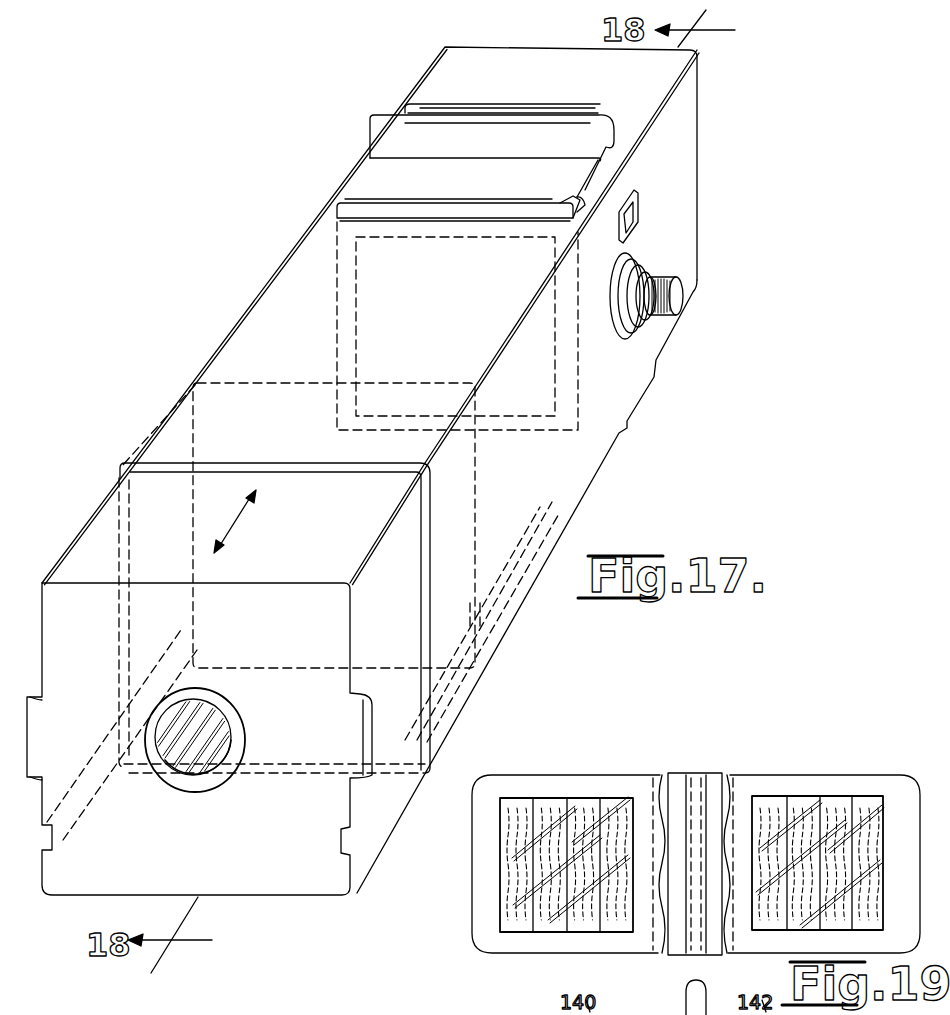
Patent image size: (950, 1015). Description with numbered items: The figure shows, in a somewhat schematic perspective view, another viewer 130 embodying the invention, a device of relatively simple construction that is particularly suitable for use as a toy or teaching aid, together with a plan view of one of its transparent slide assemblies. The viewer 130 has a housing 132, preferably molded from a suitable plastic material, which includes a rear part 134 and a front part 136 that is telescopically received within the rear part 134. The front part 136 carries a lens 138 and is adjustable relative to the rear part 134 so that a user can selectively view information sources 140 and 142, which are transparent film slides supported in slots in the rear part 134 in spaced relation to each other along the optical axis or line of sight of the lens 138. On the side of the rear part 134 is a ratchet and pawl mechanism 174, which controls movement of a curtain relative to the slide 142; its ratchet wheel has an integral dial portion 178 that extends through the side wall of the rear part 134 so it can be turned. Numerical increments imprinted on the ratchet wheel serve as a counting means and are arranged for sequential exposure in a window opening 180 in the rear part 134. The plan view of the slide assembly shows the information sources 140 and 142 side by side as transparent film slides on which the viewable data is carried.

In FIG. 17, the viewer 130 is at (256, 245).
In FIG. 17, the housing 132 is at (236, 313).
In FIG. 17, the rear part 134 is at (585, 455).
In FIG. 17, the front part 136 is at (96, 882).
In FIG. 17, the lens 138 is at (228, 744).
In FIG. 17, the information source 140 is at (577, 358).
In FIG. 19, the information source 140 is at (553, 810).
In FIG. 19, the information source 142 is at (807, 800).
In FIG. 17, the ratchet and pawl mechanism 174 is at (694, 291).
In FIG. 17, the dial portion 178 is at (668, 276).
In FIG. 17, the window opening 180 is at (637, 205).